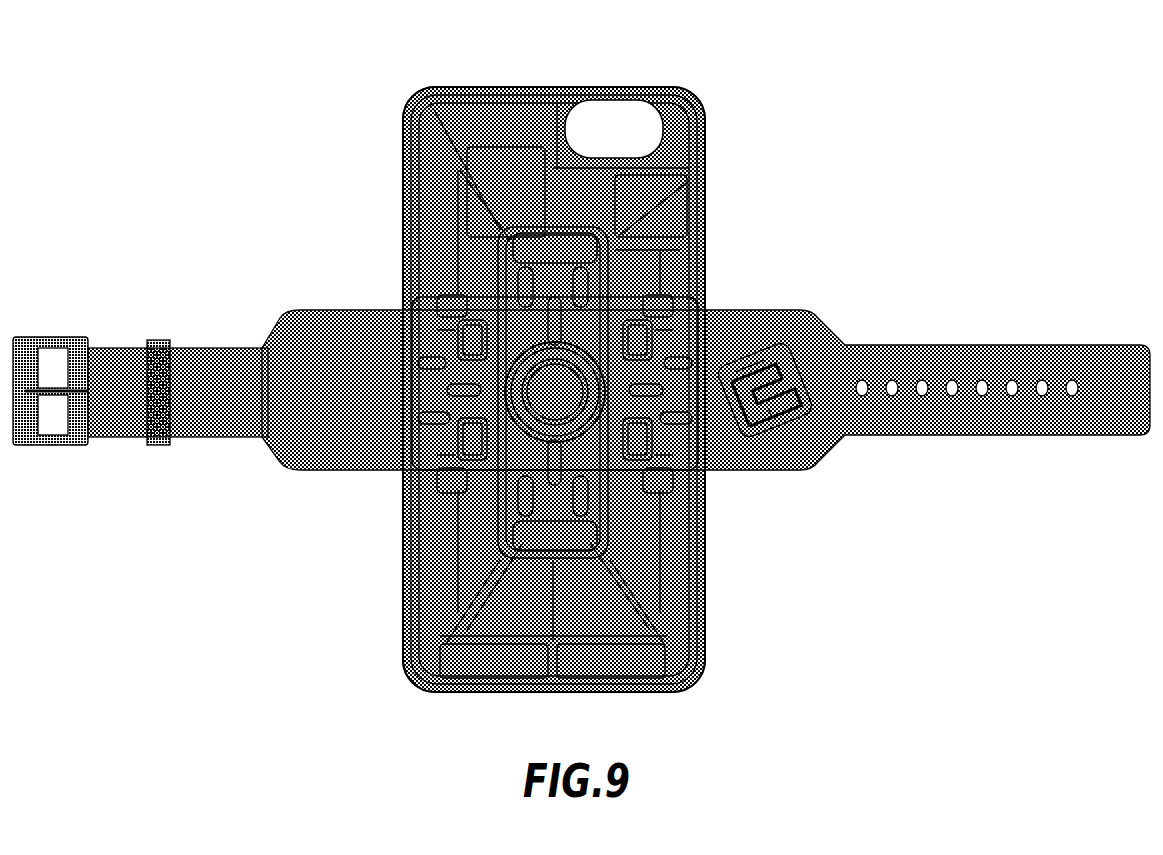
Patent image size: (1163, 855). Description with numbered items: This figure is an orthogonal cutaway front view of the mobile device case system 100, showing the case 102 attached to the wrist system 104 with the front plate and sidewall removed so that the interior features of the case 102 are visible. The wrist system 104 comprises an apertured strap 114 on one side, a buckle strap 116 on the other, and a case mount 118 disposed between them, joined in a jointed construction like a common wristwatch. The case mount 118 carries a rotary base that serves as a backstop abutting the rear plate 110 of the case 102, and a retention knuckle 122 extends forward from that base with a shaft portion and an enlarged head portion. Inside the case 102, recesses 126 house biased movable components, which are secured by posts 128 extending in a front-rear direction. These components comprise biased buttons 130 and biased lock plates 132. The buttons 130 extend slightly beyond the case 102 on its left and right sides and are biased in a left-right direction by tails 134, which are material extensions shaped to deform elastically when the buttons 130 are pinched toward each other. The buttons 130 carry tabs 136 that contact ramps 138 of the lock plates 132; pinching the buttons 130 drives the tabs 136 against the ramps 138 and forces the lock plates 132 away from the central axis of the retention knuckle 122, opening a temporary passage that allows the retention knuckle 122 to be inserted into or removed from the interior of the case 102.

The mobile device case system 100 is at (833, 93).
The case 102 is at (707, 217).
The wrist system 104 is at (822, 317).
The rear plate 110 is at (498, 115).
The apertured strap 114 is at (970, 345).
The buckle strap 116 is at (205, 345).
The case mount 118 is at (600, 348).
The retention knuckle 122 is at (600, 348).
The recesses 126 is at (555, 250).
The posts 128 is at (605, 300).
The buttons 130 is at (680, 360).
The lock plates 132 is at (582, 277).
The tails 134 is at (527, 238).
The tabs 136 is at (450, 482).
The ramps 138 is at (452, 318).